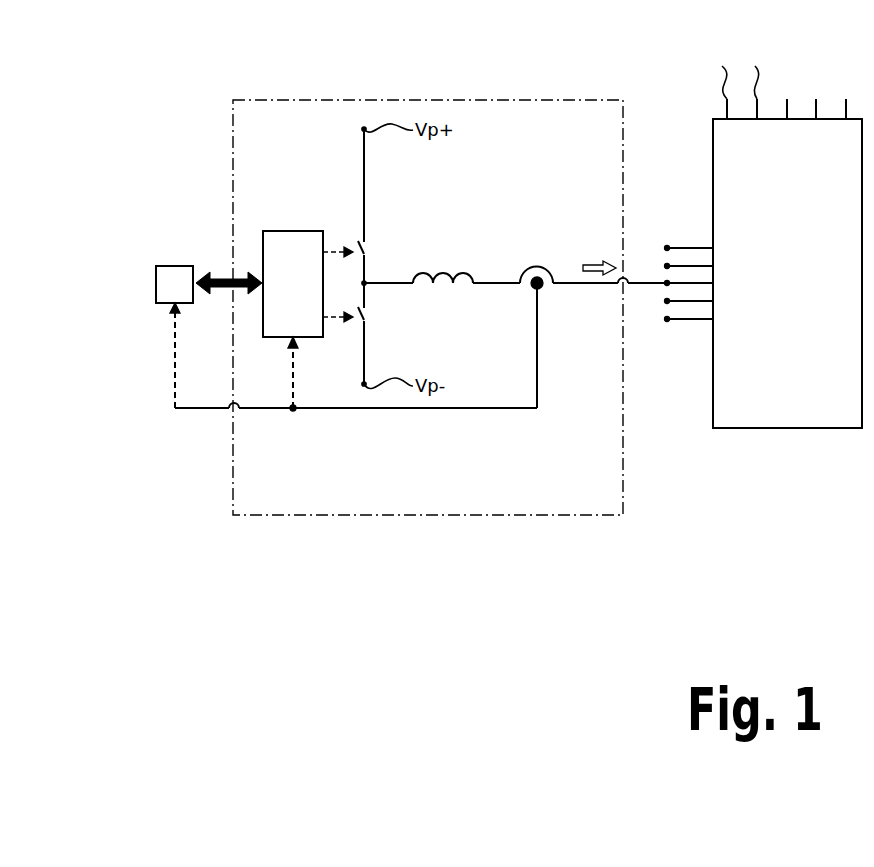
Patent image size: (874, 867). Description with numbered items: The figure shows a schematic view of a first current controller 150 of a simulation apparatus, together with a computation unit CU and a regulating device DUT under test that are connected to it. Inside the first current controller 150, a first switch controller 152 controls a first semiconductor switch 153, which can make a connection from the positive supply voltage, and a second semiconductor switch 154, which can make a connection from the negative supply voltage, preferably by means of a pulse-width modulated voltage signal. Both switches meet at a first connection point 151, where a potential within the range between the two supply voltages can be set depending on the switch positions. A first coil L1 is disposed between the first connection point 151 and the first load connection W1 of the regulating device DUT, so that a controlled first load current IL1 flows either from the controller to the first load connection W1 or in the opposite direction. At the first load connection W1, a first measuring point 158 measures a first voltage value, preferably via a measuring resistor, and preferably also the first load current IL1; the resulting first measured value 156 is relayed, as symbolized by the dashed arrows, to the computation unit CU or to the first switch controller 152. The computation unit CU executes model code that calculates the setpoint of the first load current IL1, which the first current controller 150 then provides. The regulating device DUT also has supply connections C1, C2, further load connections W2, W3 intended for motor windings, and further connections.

The first current controller 150 is at (307, 100).
The first connection point 151 is at (425, 256).
The first switch controller 152 is at (292, 231).
The first semiconductor switch 153 is at (381, 249).
The second semiconductor switch 154 is at (381, 315).
The first measured value 156 is at (353, 366).
The first measuring point 158 is at (545, 287).
The computation unit CU is at (156, 272).
The first coil L1 is at (442, 288).
The first load current IL1 is at (611, 261).
The regulating device DUT is at (713, 410).
The first load connection W1 is at (713, 290).
The second load connection W2 is at (713, 272).
The third load connection W3 is at (713, 252).
The supply connection C1 is at (713, 327).
The supply connection C2 is at (713, 308).